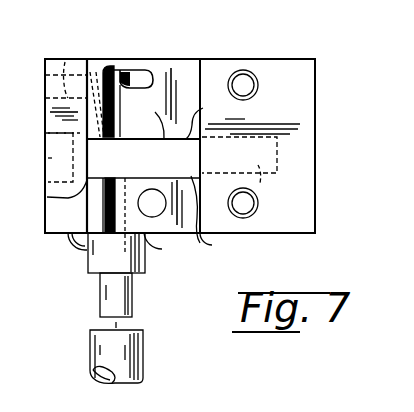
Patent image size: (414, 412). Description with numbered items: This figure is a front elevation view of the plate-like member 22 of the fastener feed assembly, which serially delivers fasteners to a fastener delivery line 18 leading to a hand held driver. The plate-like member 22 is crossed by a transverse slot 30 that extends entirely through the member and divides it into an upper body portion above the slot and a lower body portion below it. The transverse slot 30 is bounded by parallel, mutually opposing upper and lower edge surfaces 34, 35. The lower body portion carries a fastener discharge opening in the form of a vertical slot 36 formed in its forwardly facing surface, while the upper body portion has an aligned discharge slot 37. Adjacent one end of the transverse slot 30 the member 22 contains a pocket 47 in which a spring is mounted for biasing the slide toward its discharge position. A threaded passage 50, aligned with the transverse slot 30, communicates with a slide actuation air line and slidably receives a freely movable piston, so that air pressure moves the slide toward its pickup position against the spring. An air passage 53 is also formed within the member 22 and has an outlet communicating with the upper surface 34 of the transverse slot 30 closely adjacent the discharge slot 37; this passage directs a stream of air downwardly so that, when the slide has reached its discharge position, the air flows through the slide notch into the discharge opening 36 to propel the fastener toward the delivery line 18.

The fastener delivery line 18 is at (140, 362).
The plate-like member 22 is at (292, 57).
The transverse slot 30 is at (28, 196).
The upper edge surface 34 is at (203, 108).
The lower edge surface 35 is at (200, 243).
The vertical slot 36 is at (113, 182).
The discharge slot 37 is at (114, 68).
The pocket 47 is at (260, 183).
The threaded passage 50 is at (45, 158).
The air passage 53 is at (65, 62).